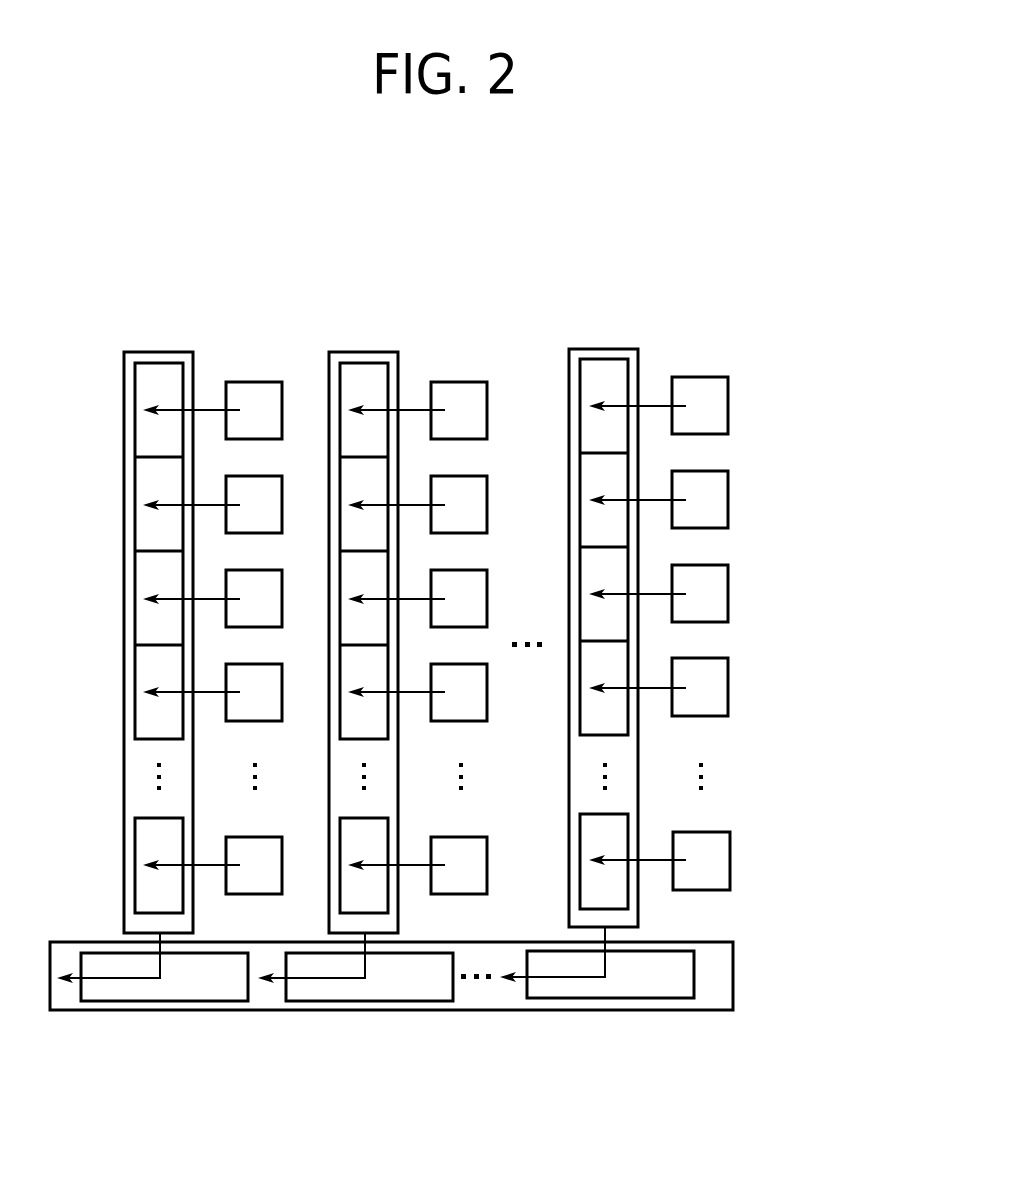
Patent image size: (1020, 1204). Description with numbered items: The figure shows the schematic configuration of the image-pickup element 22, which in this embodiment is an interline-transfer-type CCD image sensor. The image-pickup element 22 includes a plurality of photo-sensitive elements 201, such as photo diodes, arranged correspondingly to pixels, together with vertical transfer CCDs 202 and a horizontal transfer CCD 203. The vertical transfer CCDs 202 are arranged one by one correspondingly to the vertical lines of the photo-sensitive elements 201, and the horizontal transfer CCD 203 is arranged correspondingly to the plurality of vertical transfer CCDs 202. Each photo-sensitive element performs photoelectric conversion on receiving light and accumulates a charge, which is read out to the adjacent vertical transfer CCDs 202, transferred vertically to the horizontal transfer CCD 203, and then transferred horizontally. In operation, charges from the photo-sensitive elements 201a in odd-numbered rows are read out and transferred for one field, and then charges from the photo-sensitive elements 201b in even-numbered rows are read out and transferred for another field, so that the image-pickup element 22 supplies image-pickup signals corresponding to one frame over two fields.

The image-pickup element 22 is at (646, 240).
The photo-sensitive elements 201 is at (737, 374).
The photo-sensitive elements located in odd-numbered rows 201a is at (730, 495).
The photo-sensitive elements located in even-numbered rows 201b is at (730, 407).
The vertical transfer CCDs 202 is at (150, 352).
The horizontal transfer CCD 203 is at (718, 976).